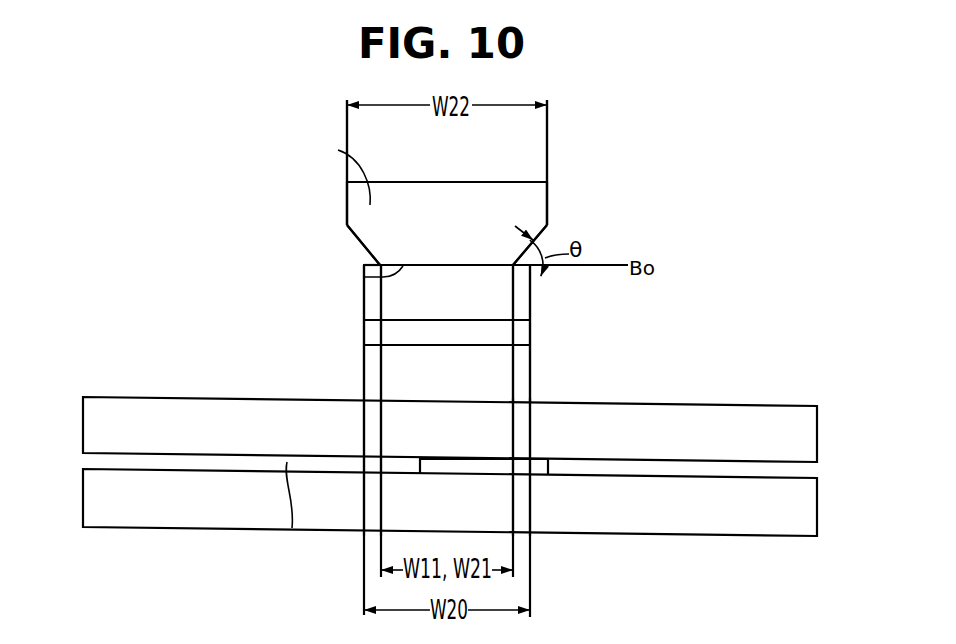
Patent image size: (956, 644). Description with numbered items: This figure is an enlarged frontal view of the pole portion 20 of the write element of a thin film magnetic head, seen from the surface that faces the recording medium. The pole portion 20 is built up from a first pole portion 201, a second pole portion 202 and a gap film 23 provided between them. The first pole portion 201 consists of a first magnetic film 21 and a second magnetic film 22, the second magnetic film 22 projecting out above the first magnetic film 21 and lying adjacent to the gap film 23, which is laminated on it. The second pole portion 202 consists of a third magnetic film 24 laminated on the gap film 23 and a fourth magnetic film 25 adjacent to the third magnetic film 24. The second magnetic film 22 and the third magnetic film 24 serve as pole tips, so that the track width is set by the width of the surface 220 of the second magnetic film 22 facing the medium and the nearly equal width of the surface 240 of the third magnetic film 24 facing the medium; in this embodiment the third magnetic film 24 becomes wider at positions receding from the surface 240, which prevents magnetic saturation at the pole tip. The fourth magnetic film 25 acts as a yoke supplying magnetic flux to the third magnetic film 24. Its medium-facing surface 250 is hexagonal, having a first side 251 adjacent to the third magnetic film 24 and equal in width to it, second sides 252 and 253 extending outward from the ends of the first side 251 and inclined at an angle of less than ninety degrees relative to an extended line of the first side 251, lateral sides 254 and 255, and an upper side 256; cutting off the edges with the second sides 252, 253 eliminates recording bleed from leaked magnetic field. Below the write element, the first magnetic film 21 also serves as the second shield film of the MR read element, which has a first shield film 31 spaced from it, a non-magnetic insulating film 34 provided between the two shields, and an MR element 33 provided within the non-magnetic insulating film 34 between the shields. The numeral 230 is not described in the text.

The pole portion 20 is at (261, 282).
The first pole portion 201 is at (352, 392).
The second pole portion 202 is at (340, 180).
The first magnetic film 21 is at (723, 413).
The second magnetic film 22 is at (373, 367).
The gap film 23 is at (373, 333).
The third magnetic film 24 is at (373, 300).
The fourth magnetic film 25 is at (462, 180).
The surface of the second magnetic film facing opposite the medium 220 is at (524, 363).
The intermediate layer (right side) 230 is at (524, 328).
The surface of the third magnetic film facing opposite the medium 240 is at (524, 296).
The surface of the fourth magnetic film facing opposite the medium 250 is at (334, 169).
The first side 251 is at (364, 268).
The second side 252 is at (543, 234).
The second side 253 is at (348, 229).
The lateral side 254 is at (347, 201).
The lateral side 255 is at (547, 202).
The upper side 256 is at (392, 182).
The first shield film 31 is at (722, 518).
The MR element 33 is at (540, 462).
The non-magnetic insulating film 34 is at (291, 517).